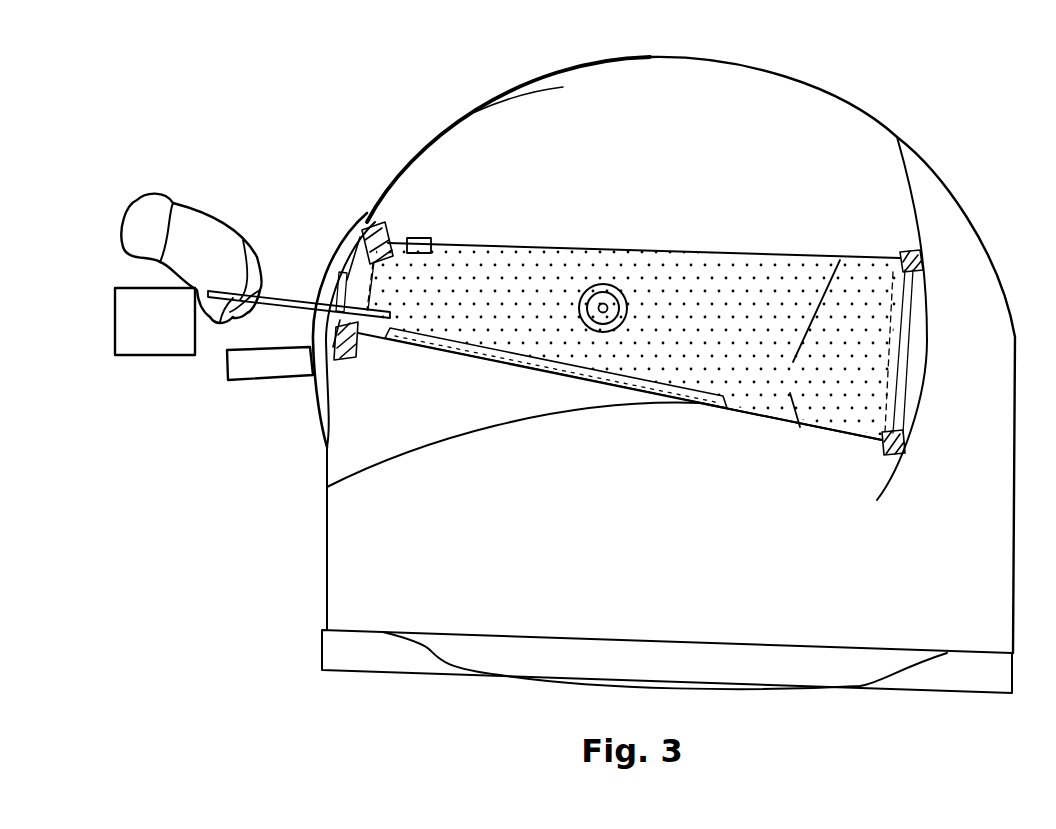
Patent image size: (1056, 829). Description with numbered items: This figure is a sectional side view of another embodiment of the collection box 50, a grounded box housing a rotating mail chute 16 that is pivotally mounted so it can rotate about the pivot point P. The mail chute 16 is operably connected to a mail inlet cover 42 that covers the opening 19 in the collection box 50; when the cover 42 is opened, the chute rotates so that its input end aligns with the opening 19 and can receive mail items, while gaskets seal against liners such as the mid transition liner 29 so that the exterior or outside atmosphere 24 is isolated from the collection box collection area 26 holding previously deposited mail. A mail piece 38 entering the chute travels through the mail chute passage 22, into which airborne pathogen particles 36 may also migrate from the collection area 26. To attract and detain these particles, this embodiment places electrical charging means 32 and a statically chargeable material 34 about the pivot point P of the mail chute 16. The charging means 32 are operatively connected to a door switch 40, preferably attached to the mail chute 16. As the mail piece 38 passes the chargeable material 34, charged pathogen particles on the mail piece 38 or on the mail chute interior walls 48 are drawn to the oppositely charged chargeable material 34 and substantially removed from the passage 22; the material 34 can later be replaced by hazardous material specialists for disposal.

The mail chute 16 is at (522, 240).
The opening in the collection box 19 is at (320, 292).
The mail chute passage 22 is at (504, 277).
The outside atmosphere 24 is at (446, 139).
The collection box collection area 26 is at (667, 570).
The mid transition liner 29 is at (390, 458).
The electrical charging means 32 is at (598, 276).
The statically chargeable material 34 is at (585, 307).
The airborne pathogen particles 36 is at (742, 287).
The mail piece 38 is at (575, 372).
The door switch 40 is at (418, 237).
The mail inlet cover 42 is at (343, 237).
The mail chute interior walls 48 is at (805, 343).
The collection box 50 is at (783, 75).
The pivot point P is at (606, 305).